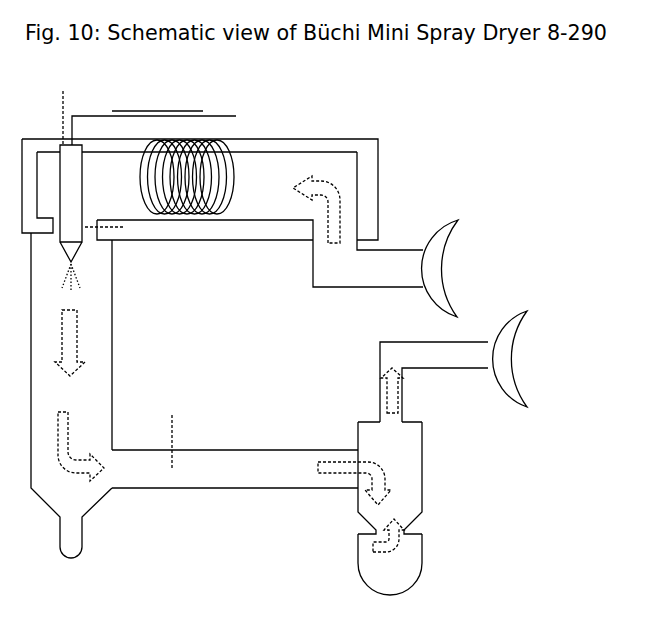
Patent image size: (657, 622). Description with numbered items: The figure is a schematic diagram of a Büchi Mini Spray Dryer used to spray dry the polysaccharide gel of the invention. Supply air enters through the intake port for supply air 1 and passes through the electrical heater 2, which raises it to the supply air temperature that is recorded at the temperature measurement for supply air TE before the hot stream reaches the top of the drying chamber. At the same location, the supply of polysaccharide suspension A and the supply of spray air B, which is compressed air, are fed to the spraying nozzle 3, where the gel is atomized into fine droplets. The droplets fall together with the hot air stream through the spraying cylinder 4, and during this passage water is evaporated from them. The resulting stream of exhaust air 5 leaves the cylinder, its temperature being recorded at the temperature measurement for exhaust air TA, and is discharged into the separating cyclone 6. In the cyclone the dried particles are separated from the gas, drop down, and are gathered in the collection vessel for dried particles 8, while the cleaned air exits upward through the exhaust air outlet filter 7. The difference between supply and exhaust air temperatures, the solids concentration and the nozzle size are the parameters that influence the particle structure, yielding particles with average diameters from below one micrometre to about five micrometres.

The intake port for supply air 1 is at (393, 268).
The electrical heater 2 is at (240, 191).
The spraying nozzle 3 is at (71, 218).
The spraying cylinder 4 is at (71, 395).
The exhaust air 5 is at (235, 469).
The separating cyclone 6 is at (370, 478).
The exhaust air outlet filter 7 is at (453, 366).
The collection vessel for dried particles 8 is at (390, 557).
The supply of polysaccharide suspension A is at (154, 120).
The supply of spray air B is at (55, 118).
The temperature measurement for supply air TE is at (113, 229).
The temperature measurement for exhaust air TA is at (171, 433).